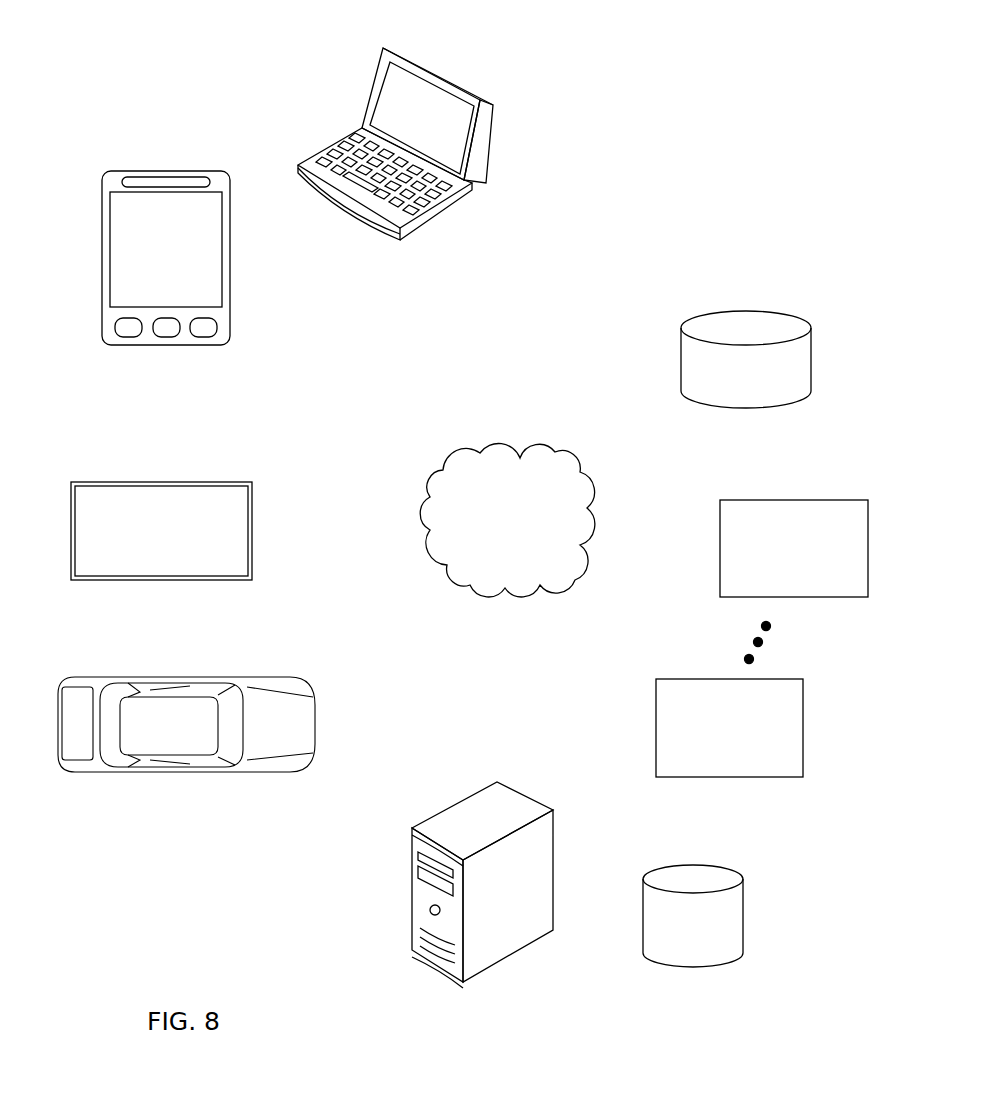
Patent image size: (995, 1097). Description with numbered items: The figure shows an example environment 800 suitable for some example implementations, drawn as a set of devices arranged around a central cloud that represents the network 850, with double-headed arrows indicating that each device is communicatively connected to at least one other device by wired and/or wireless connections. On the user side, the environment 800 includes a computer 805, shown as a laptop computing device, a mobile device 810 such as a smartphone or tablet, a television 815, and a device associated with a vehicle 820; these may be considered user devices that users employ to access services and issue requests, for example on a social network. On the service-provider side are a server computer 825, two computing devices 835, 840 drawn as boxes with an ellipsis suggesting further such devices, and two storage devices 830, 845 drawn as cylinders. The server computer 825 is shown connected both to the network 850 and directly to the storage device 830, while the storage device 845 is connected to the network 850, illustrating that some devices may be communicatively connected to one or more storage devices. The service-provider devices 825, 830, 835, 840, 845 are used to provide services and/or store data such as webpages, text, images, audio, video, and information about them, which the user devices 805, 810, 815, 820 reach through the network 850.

The environment 800 is at (186, 49).
The computer 805 is at (470, 443).
The mobile device 810 is at (430, 470).
The television 815 is at (420, 539).
The device associated with a vehicle 820 is at (445, 580).
The server computer 825 is at (500, 598).
The storage device 830 is at (553, 915).
The computing device 835 is at (567, 587).
The computing device 840 is at (597, 533).
The storage device 845 is at (570, 455).
The network 850 is at (507, 519).